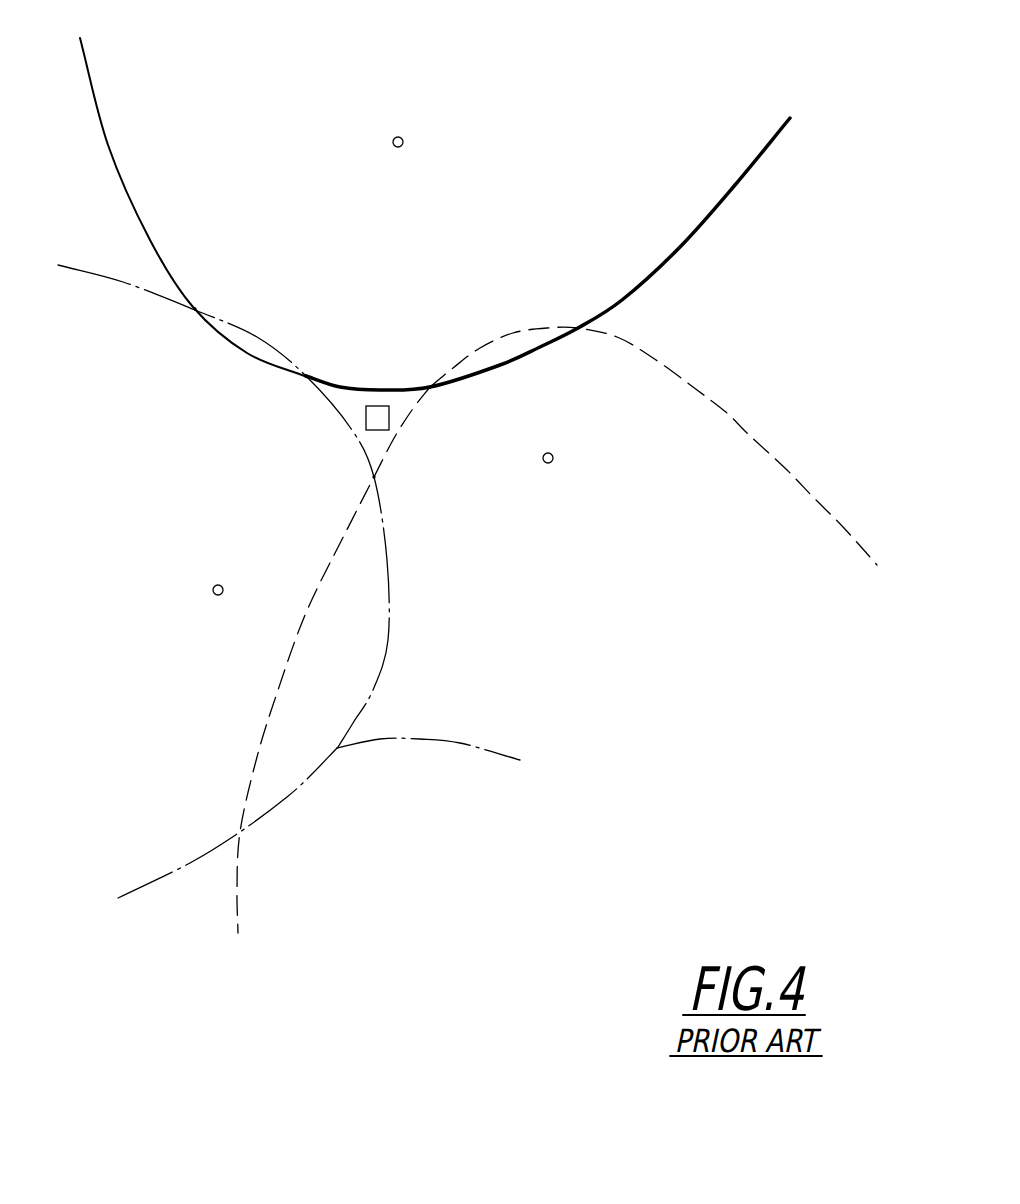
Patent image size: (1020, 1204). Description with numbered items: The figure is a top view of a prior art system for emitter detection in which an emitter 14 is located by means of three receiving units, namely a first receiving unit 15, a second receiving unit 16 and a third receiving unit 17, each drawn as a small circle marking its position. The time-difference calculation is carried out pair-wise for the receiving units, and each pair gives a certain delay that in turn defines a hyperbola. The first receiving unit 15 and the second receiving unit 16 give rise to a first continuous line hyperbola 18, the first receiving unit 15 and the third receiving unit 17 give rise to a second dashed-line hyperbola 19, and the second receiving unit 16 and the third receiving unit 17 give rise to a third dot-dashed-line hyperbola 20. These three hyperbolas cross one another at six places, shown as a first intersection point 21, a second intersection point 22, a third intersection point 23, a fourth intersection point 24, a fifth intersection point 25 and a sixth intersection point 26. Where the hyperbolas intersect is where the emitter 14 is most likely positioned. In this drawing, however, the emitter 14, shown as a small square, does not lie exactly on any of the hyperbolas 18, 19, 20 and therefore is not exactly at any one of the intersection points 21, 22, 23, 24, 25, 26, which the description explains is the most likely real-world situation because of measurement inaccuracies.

The emitter 14 is at (378, 414).
The first receiving unit 15 is at (398, 135).
The second receiving unit 16 is at (213, 590).
The third receiving unit 17 is at (551, 463).
The first continuous line hyperbola 18 is at (105, 145).
The second dashed-line hyperbola 19 is at (742, 422).
The third dot-dashed-line hyperbola 20 is at (450, 759).
The first intersection point 21 is at (195, 307).
The second intersection point 22 is at (306, 376).
The third intersection point 23 is at (430, 387).
The fourth intersection point 24 is at (578, 328).
The fifth intersection point 25 is at (375, 480).
The sixth intersection point 26 is at (240, 832).